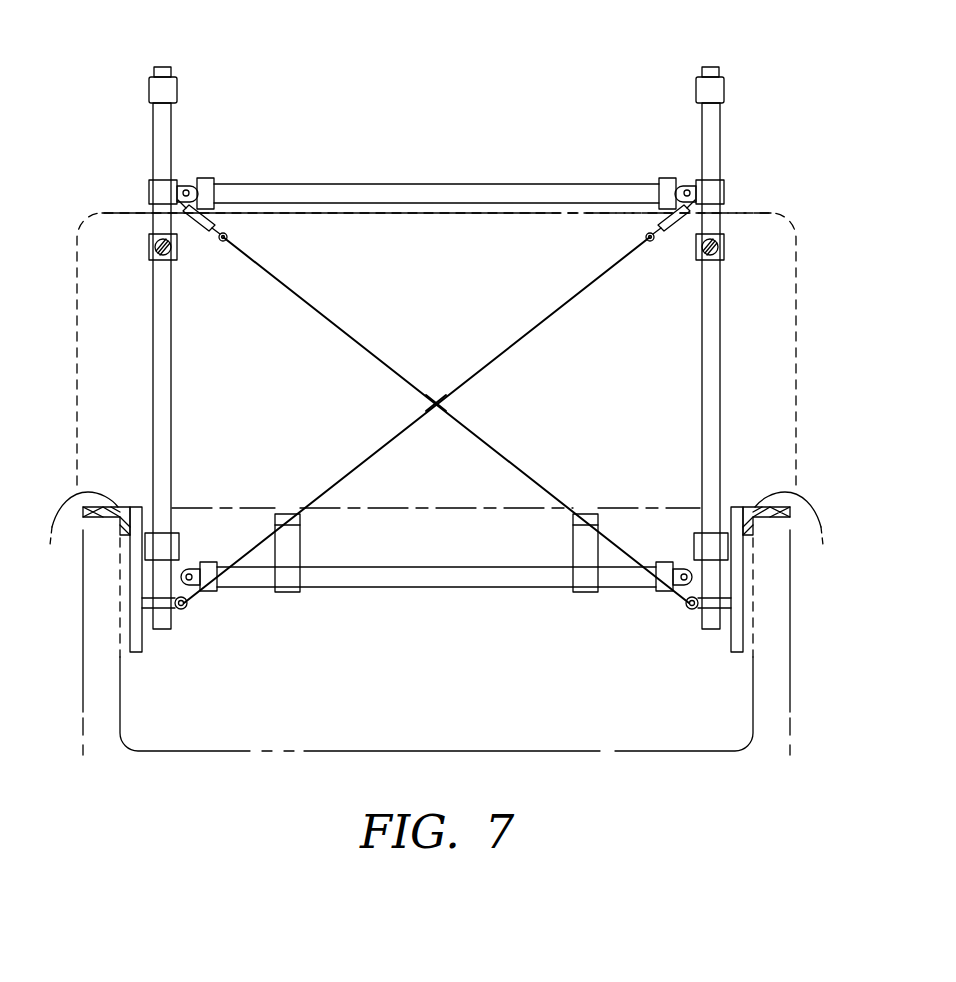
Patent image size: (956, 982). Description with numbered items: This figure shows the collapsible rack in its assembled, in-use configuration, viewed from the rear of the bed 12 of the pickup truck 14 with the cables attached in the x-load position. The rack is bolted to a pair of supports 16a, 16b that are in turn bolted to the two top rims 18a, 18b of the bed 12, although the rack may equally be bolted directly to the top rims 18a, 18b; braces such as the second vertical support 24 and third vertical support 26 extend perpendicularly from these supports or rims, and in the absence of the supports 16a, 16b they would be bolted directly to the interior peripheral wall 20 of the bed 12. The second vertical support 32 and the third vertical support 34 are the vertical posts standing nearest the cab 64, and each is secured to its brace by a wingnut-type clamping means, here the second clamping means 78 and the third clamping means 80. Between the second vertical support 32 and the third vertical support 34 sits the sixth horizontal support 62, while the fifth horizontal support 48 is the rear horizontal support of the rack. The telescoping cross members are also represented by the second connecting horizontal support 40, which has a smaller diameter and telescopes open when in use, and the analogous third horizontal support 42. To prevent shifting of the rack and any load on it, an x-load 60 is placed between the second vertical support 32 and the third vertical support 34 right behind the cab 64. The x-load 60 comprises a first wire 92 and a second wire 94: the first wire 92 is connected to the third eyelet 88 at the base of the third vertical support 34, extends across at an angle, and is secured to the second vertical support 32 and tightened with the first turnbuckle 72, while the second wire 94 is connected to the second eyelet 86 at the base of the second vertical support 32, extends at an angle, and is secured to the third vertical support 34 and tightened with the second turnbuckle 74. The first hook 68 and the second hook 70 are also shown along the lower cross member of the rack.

The bed 12 is at (238, 752).
The truck 14 is at (366, 208).
The support 16a is at (754, 505).
The support 16b is at (119, 505).
The top rim of bed 18a is at (800, 530).
The top rim of bed 18b is at (75, 530).
The interior peripheral wall of bed 20 is at (120, 695).
The second vertical support 24 is at (731, 645).
The third vertical support 26 is at (142, 645).
The second vertical support 32 is at (710, 133).
The third vertical support 34 is at (163, 133).
The second connecting horizontal support 40 is at (721, 250).
The third horizontal support 42 is at (152, 250).
The fifth horizontal support 48 is at (435, 577).
The x-load 60 is at (440, 395).
The sixth horizontal support 62 is at (463, 193).
The cab 64 is at (530, 215).
The first hook 68 is at (583, 590).
The second hook 70 is at (292, 590).
The first turnbuckle 72 is at (673, 228).
The second turnbuckle 74 is at (200, 228).
The second clamping means 78 is at (700, 548).
The third clamping means 80 is at (170, 548).
The second eyelet 86 is at (686, 607).
The third eyelet 88 is at (187, 607).
The first wire 92 is at (542, 318).
The second wire 94 is at (332, 318).